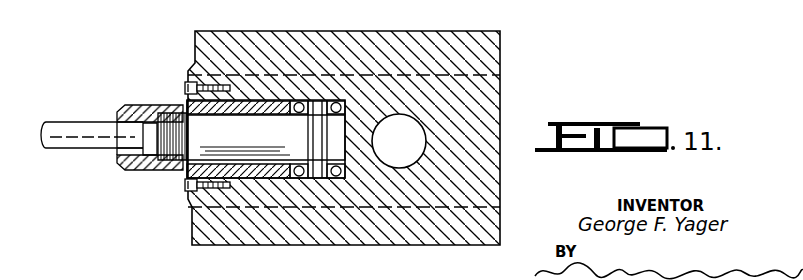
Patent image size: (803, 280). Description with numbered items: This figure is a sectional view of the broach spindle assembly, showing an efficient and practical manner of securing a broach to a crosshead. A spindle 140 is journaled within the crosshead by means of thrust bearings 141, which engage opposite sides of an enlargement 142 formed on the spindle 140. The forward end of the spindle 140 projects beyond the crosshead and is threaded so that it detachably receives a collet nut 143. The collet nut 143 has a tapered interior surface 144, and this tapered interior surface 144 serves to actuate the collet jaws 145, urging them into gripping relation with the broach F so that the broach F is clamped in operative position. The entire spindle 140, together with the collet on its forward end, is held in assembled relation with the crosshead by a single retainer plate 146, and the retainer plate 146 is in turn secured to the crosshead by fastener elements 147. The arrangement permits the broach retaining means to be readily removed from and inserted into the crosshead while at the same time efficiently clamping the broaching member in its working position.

The broach F is at (72, 126).
The spindle 140 is at (280, 146).
The thrust bearings 141 is at (320, 165).
The enlargement 142 is at (322, 101).
The collet nut 143 is at (152, 101).
The tapered interior surface 144 is at (117, 113).
The collet jaws 145 is at (118, 171).
The retainer plate 146 is at (188, 182).
The fastener elements 147 is at (183, 192).